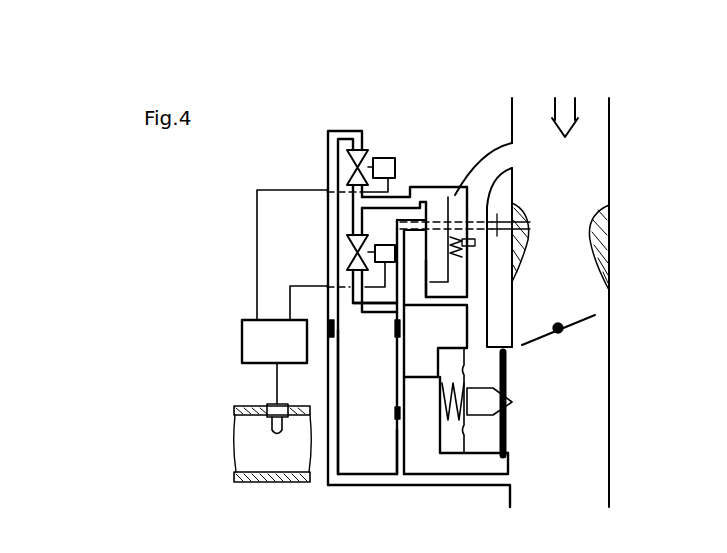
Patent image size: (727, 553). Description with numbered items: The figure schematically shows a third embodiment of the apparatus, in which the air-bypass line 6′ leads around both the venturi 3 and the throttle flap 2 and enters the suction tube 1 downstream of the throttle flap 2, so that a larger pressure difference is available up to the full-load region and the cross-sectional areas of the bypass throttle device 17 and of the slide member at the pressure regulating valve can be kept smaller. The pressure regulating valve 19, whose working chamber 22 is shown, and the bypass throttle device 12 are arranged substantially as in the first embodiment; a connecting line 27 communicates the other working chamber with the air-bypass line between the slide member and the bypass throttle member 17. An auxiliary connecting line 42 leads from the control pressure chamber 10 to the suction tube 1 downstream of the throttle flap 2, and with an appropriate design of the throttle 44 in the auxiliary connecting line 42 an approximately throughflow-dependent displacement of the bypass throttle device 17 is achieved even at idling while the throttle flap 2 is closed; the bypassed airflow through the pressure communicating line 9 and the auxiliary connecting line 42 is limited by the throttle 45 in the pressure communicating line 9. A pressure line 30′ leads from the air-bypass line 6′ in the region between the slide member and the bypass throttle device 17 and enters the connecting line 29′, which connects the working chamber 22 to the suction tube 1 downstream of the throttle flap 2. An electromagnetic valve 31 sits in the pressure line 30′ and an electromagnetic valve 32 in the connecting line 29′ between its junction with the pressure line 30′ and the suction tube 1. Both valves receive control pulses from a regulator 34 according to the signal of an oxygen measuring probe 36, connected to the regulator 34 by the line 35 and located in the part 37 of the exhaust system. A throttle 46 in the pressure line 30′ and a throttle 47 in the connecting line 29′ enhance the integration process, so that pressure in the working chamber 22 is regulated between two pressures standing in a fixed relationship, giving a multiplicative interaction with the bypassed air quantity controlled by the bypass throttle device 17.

The suction tube 1 is at (611, 404).
The throttle flap 2 is at (563, 330).
The venturi 3 is at (600, 233).
The air-bypass line 6′ is at (497, 165).
The pressure communicating line 9 is at (394, 355).
The control pressure chamber 10 is at (447, 435).
The bypass throttle device 12 is at (466, 455).
The bypass throttle member 17 is at (505, 405).
The pressure regulating valve 19 is at (413, 282).
The working chamber 22 is at (455, 215).
The connecting line 27 is at (463, 297).
The connecting line 29′ is at (410, 192).
The pressure line 30′ is at (331, 325).
The electromagnetic valve 31 is at (348, 250).
The electromagnetic valve 32 is at (357, 150).
The regulator 34 is at (280, 330).
The line 35 is at (280, 370).
The oxygen measuring probe 36 is at (270, 405).
The part of the exhaust system 37 is at (282, 483).
The auxiliary connecting line 42 is at (400, 440).
The throttle 44 is at (393, 412).
The throttle 45 is at (400, 328).
The throttle 46 is at (363, 308).
The throttle 47 is at (335, 330).